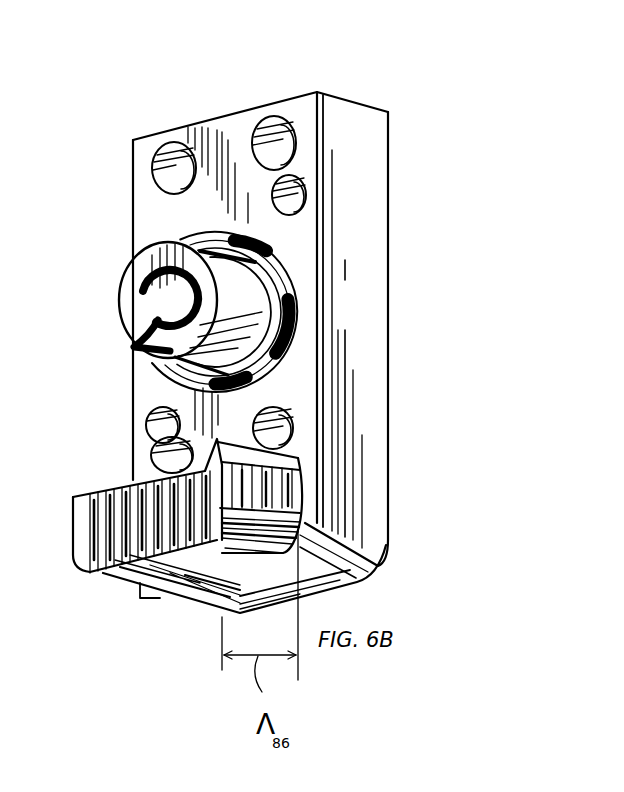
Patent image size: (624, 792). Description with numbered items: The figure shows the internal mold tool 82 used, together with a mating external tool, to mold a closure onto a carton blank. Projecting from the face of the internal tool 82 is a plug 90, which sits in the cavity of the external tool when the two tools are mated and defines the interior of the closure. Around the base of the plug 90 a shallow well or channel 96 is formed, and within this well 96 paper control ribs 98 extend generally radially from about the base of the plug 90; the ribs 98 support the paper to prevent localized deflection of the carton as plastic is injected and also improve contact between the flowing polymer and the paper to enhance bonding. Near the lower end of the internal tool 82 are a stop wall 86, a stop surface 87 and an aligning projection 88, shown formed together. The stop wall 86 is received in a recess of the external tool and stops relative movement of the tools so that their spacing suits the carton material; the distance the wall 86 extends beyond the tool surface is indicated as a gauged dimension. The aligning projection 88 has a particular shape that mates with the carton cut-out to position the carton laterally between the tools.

The internal tool 82 is at (210, 117).
The stop wall 86 is at (82, 535).
The stop surface 87 is at (110, 487).
The aligning projection 88 is at (233, 442).
The plug 90 is at (127, 302).
The well 96 is at (297, 305).
The paper control ribs 98 is at (235, 232).